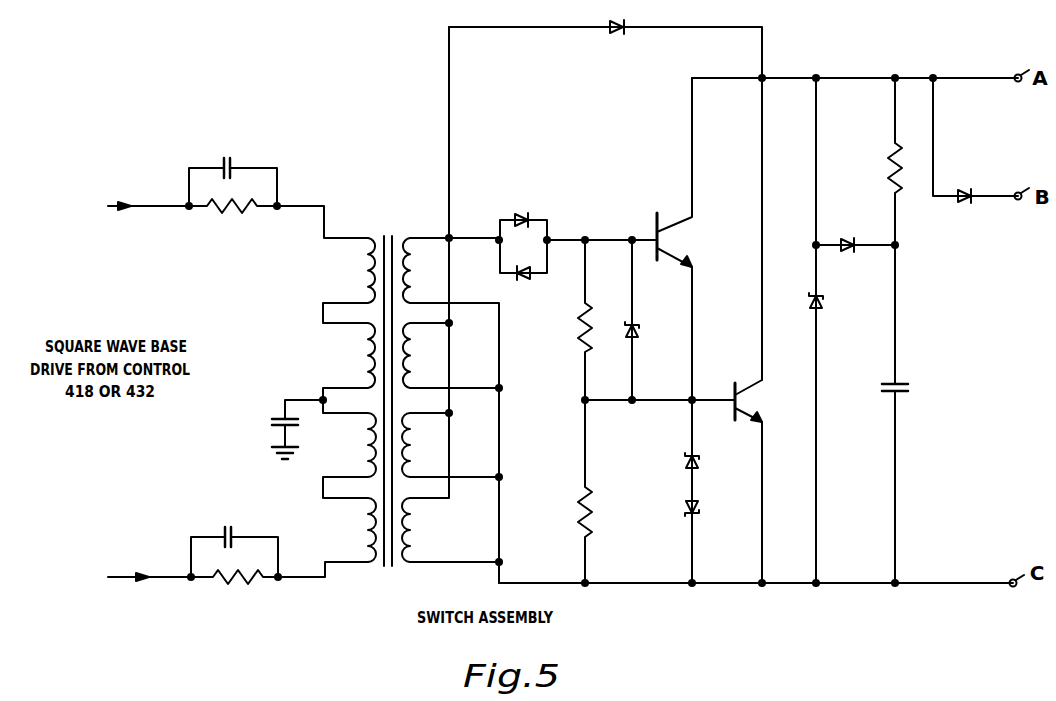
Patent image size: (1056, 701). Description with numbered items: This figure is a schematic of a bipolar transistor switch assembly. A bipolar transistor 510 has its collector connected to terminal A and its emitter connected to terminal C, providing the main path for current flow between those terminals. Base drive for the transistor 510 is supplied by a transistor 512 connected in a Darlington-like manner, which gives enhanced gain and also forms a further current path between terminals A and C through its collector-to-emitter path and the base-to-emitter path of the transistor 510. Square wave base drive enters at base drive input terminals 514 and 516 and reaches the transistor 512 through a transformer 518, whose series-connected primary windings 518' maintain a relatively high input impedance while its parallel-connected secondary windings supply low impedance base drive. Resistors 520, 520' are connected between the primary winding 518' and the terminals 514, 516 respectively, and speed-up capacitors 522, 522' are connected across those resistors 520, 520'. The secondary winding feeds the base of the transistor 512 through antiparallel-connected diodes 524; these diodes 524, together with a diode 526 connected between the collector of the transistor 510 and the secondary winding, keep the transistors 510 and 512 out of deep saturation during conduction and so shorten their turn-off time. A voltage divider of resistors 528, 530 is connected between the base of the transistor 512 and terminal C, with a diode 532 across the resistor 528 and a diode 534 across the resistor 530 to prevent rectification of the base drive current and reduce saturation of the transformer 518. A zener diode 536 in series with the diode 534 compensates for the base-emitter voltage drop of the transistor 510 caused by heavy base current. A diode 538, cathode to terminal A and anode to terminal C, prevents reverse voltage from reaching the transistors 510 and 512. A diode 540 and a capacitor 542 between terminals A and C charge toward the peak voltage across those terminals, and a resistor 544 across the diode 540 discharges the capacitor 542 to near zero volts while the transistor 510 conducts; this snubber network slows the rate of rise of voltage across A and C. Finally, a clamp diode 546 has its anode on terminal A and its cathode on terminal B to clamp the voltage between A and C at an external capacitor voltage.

The bipolar transistor 510 is at (737, 381).
The transistor 512 is at (657, 215).
The base drive input terminal 514 is at (142, 205).
The base drive input terminal 516 is at (120, 576).
The transformer 518 is at (366, 384).
The primary windings 518' is at (341, 295).
The resistor 520 is at (233, 224).
The resistor 520' is at (234, 600).
The speed-up capacitor 522 is at (233, 163).
The speed-up capacitor 522' is at (234, 534).
The antiparallel-connected diodes 524 is at (544, 203).
The diode 526 is at (620, 34).
The resistor 528 is at (578, 331).
The resistor 530 is at (578, 519).
The diode 532 is at (638, 331).
The diode 534 is at (698, 458).
The zener diode 536 is at (698, 505).
The diode 538 is at (823, 301).
The diode 540 is at (848, 252).
The capacitor 542 is at (908, 385).
The resistor 544 is at (887, 175).
The clamp diode 546 is at (966, 203).